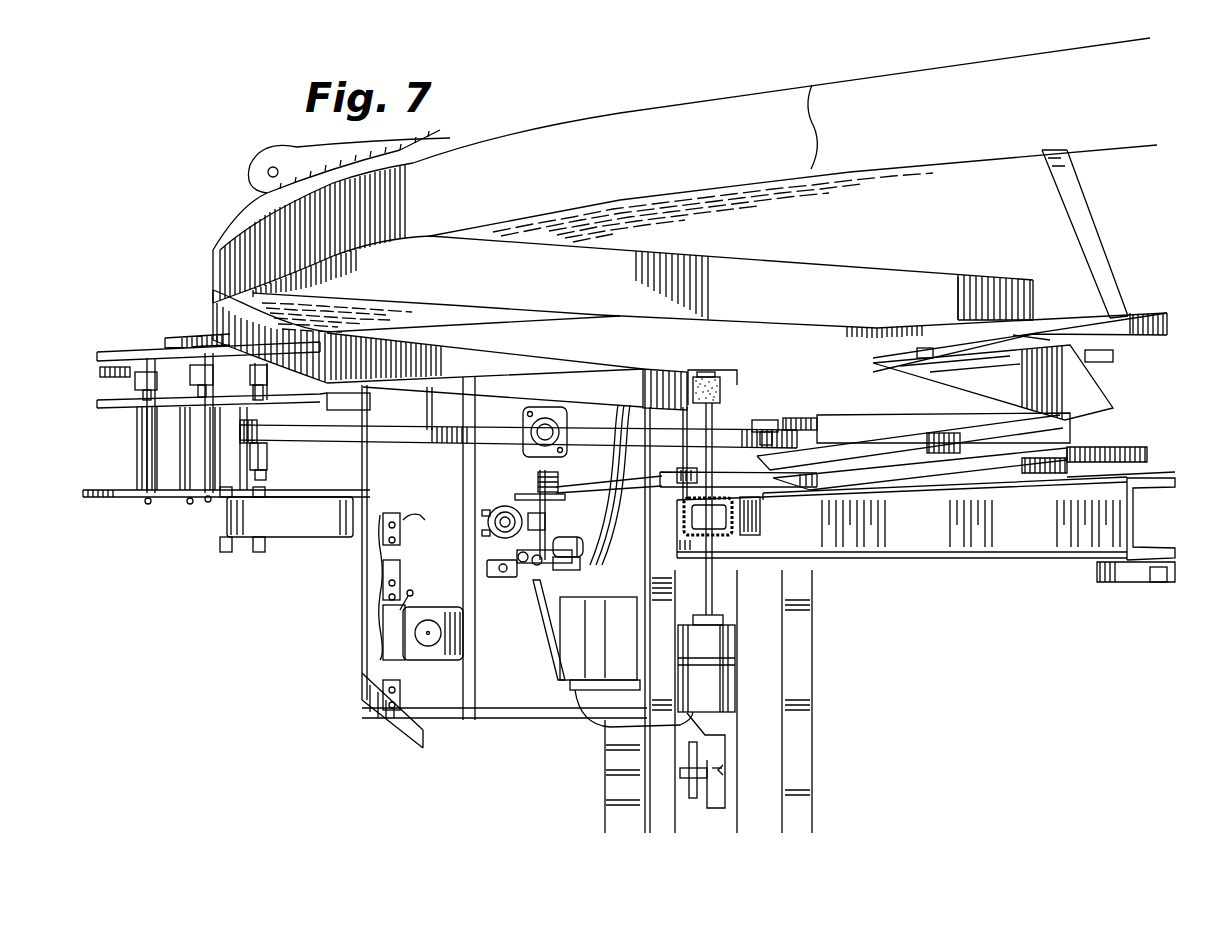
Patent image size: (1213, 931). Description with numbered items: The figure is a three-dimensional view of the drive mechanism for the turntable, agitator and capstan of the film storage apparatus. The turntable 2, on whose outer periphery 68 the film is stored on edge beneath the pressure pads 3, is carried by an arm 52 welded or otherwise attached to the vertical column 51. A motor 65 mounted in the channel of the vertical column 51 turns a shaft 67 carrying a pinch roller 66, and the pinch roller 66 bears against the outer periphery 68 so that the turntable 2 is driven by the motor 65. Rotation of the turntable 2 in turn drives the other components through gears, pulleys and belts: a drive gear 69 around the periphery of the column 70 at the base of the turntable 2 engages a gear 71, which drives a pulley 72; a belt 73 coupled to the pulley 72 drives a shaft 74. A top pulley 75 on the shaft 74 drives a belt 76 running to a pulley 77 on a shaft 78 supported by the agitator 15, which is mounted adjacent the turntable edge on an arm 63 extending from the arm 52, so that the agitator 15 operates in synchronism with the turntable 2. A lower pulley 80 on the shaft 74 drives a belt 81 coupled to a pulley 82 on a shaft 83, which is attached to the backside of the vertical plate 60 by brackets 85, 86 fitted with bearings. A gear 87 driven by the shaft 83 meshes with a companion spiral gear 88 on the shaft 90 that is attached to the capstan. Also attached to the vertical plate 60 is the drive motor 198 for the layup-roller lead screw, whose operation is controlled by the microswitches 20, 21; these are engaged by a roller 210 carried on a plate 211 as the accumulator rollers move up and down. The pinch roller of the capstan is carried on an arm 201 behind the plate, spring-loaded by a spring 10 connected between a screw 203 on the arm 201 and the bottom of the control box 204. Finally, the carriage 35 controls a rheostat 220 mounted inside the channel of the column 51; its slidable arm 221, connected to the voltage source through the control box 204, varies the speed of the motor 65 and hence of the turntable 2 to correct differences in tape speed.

The turntable 2 is at (225, 283).
The pressure pad 3 is at (252, 185).
The spring 10 is at (548, 700).
The agitator 15 is at (133, 345).
The microswitch 20 is at (400, 590).
The microswitch 21 is at (422, 607).
The carriage 35 is at (698, 800).
The vertical column 51 is at (805, 735).
The arm 52 is at (956, 550).
The vertical plate 60 is at (495, 712).
The arm 63 is at (755, 520).
The motor 65 is at (725, 686).
The pinch roller 66 is at (702, 377).
The shaft 67 is at (714, 597).
The outer periphery 68 is at (800, 131).
The drive gear 69 is at (1120, 452).
The column 70 is at (1118, 397).
The gear 71 is at (1020, 467).
The pulley 72 is at (1010, 423).
The belt 73 is at (888, 455).
The shaft 74 is at (778, 427).
The top pulley 75 is at (750, 426).
The belt 76 is at (406, 433).
The pulley 77 is at (268, 445).
The shaft 78 is at (268, 474).
The lower pulley 80 is at (818, 483).
The belt 81 is at (658, 481).
The pulley 82 is at (537, 478).
The shaft 83 is at (546, 522).
The bracket 85 is at (520, 497).
The bracket 86 is at (520, 565).
The gear 87 is at (554, 497).
The spiral gear 88 is at (500, 538).
The shaft 90 is at (515, 578).
The drive motor 198 is at (530, 420).
The arm 201 is at (582, 565).
The screw 203 is at (585, 548).
The control box 204 is at (605, 731).
The roller 210 is at (450, 640).
The plate 211 is at (400, 613).
The rheostat 220 is at (720, 776).
The slidable arm 221 is at (716, 769).